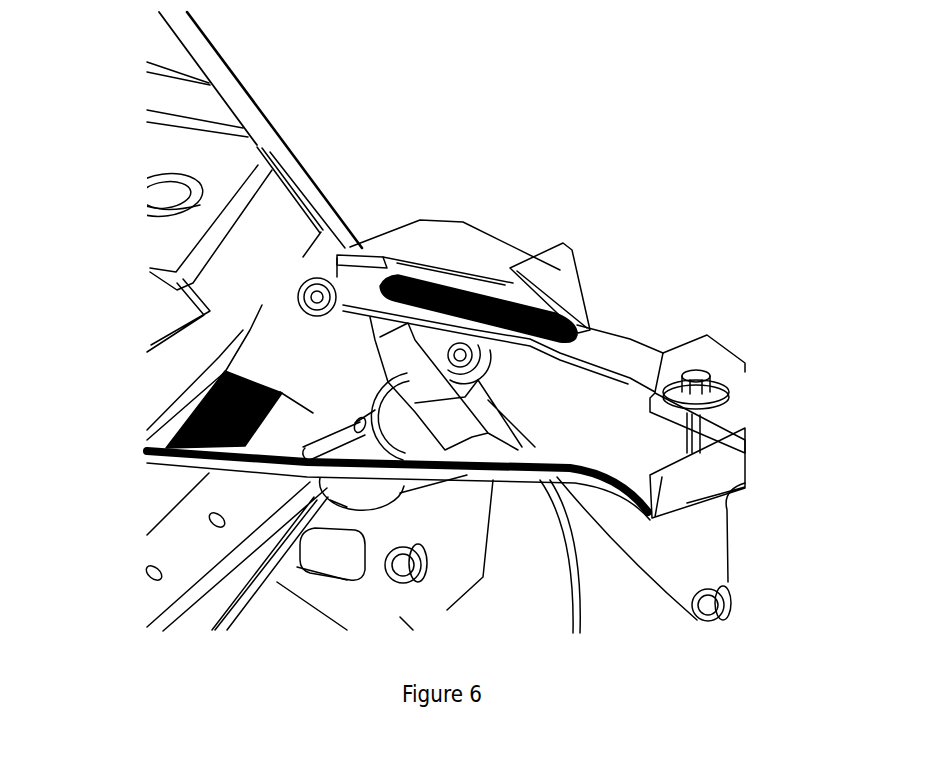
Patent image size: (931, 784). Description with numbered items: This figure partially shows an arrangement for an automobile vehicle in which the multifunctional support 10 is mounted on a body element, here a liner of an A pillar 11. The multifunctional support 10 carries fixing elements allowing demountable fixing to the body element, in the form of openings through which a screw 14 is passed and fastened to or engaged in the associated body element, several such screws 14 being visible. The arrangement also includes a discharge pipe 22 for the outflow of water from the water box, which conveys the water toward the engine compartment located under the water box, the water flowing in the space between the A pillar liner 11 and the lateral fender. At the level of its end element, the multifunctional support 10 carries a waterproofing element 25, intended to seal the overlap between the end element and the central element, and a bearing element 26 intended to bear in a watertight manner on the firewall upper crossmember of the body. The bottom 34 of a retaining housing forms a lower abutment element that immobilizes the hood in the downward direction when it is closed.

The multifunctional support 10 is at (632, 341).
The A pillar liner 11 is at (543, 572).
The screw 14 is at (704, 368).
The discharge pipe 22 is at (398, 419).
The waterproofing element 25 is at (650, 505).
The bearing element 26 is at (173, 426).
The bottom of retaining housing 34 is at (512, 309).